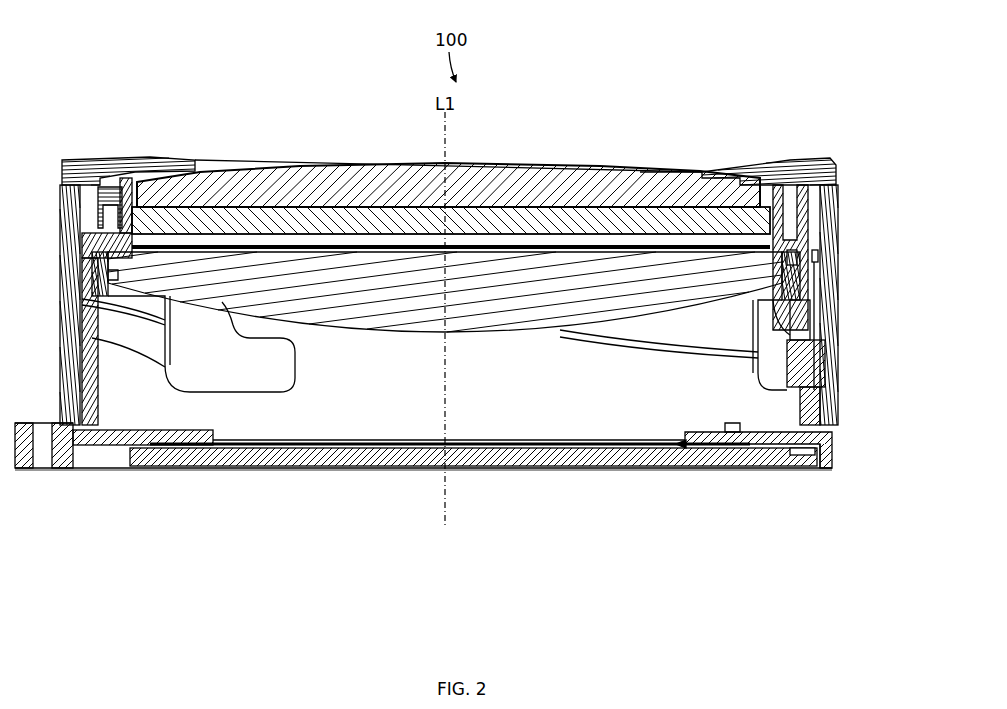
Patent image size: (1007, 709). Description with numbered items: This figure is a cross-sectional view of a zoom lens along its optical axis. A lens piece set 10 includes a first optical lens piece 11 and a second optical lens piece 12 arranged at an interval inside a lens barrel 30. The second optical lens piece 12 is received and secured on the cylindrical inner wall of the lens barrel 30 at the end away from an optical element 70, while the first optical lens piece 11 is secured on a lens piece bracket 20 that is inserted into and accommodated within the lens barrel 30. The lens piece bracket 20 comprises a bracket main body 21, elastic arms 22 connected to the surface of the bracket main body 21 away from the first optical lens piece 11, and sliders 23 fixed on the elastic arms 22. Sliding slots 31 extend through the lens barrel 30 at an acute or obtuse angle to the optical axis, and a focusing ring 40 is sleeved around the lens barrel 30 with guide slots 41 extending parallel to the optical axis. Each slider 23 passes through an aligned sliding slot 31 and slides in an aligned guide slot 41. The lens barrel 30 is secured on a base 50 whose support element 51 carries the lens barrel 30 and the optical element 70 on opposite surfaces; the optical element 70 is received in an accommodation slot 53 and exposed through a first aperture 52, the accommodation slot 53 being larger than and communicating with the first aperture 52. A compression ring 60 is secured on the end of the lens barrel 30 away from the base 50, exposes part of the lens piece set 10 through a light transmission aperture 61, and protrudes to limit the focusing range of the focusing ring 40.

The lens piece set 10 is at (445, 200).
The first optical lens piece 11 is at (611, 265).
The second optical lens piece 12 is at (547, 198).
The lens piece bracket 20 is at (509, 327).
The bracket main body 21 is at (800, 310).
The elastic arm 22 is at (795, 338).
The slider 23 is at (805, 372).
The lens barrel 30 is at (822, 270).
The sliding slot 31 is at (805, 405).
The focusing ring 40 is at (840, 216).
The guide slot 41 is at (826, 294).
The base 50 is at (840, 450).
The support element 51 is at (720, 470).
The first aperture 52 is at (652, 470).
The accommodation slot 53 is at (830, 472).
The compression ring 60 is at (806, 160).
The light transmission aperture 61 is at (690, 166).
The optical element 70 is at (230, 452).